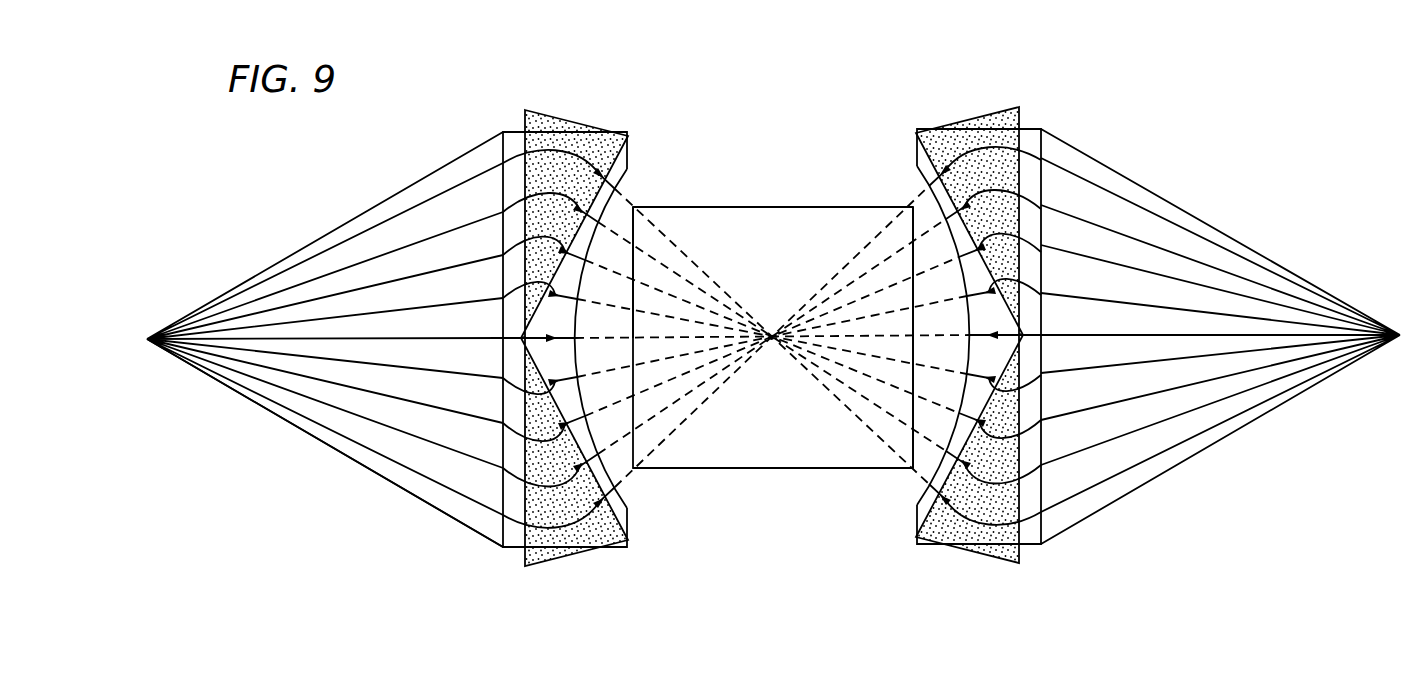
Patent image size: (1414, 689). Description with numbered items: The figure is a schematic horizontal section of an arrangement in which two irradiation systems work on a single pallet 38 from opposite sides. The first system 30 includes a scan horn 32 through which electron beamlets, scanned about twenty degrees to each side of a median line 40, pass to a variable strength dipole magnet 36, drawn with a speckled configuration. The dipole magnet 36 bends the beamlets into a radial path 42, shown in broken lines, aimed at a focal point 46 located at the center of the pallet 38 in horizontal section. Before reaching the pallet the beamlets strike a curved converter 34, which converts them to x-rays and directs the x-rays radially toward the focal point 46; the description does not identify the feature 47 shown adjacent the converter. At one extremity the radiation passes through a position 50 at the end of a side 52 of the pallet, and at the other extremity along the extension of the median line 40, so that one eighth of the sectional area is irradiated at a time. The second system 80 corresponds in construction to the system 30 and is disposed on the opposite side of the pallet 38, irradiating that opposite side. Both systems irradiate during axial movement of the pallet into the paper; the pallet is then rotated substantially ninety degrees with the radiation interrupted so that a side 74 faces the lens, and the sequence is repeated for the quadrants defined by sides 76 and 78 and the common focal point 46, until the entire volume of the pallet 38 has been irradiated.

The system 30 is at (370, 518).
The scan horn 32 is at (310, 410).
The converter 34 is at (602, 535).
The variable strength dipole magnet 36 is at (560, 137).
The pallet 38 is at (858, 468).
The median line 40 is at (408, 339).
The radial path 42 is at (657, 340).
The focal point 46 is at (773, 337).
The concave surface 47 is at (599, 437).
The position defining extremity of side 50 is at (637, 207).
The side of the pallet 52 is at (630, 353).
The side of the pallet 74 is at (783, 208).
The side of the pallet 76 is at (931, 339).
The side of the pallet 78 is at (747, 468).
The system 80 is at (1176, 514).